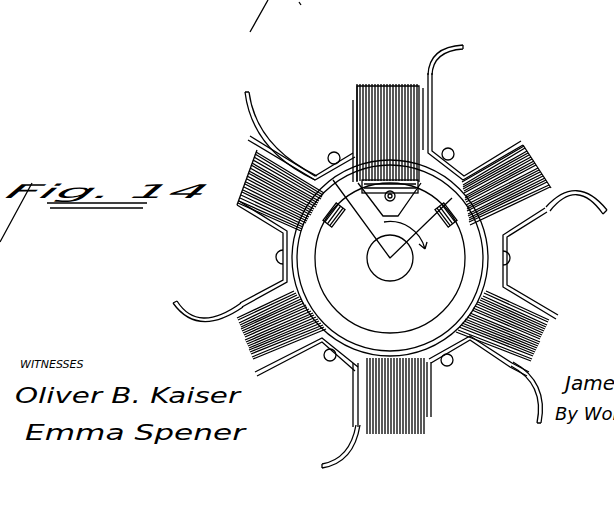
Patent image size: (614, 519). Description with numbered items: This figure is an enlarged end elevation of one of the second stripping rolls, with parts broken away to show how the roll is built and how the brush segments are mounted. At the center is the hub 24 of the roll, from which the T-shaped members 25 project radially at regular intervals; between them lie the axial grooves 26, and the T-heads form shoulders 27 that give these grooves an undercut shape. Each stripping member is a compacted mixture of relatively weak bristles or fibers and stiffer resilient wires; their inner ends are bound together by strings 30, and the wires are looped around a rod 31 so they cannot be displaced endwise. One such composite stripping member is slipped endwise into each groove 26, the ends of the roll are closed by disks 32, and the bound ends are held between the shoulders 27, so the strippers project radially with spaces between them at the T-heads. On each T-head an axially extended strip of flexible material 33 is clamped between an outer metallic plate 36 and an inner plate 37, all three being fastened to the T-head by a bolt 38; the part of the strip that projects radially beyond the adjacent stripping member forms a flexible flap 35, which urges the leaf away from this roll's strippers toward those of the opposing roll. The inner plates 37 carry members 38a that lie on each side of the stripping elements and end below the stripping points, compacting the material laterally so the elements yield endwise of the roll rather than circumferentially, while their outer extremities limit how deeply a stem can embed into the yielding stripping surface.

The hub 24 is at (392, 230).
The T-shaped members 25 is at (450, 181).
The axial grooves 26 is at (380, 212).
The shoulders 27 is at (350, 183).
The strings 30 is at (322, 241).
The rod 31 is at (390, 201).
The disks 32 is at (390, 258).
The strips of flexible material 33 is at (439, 165).
The flexible flaps 35 is at (464, 49).
The metallic plates 36 is at (431, 112).
The inner plates 37 is at (459, 154).
The bolt 38 is at (517, 261).
The members 38a is at (228, 200).